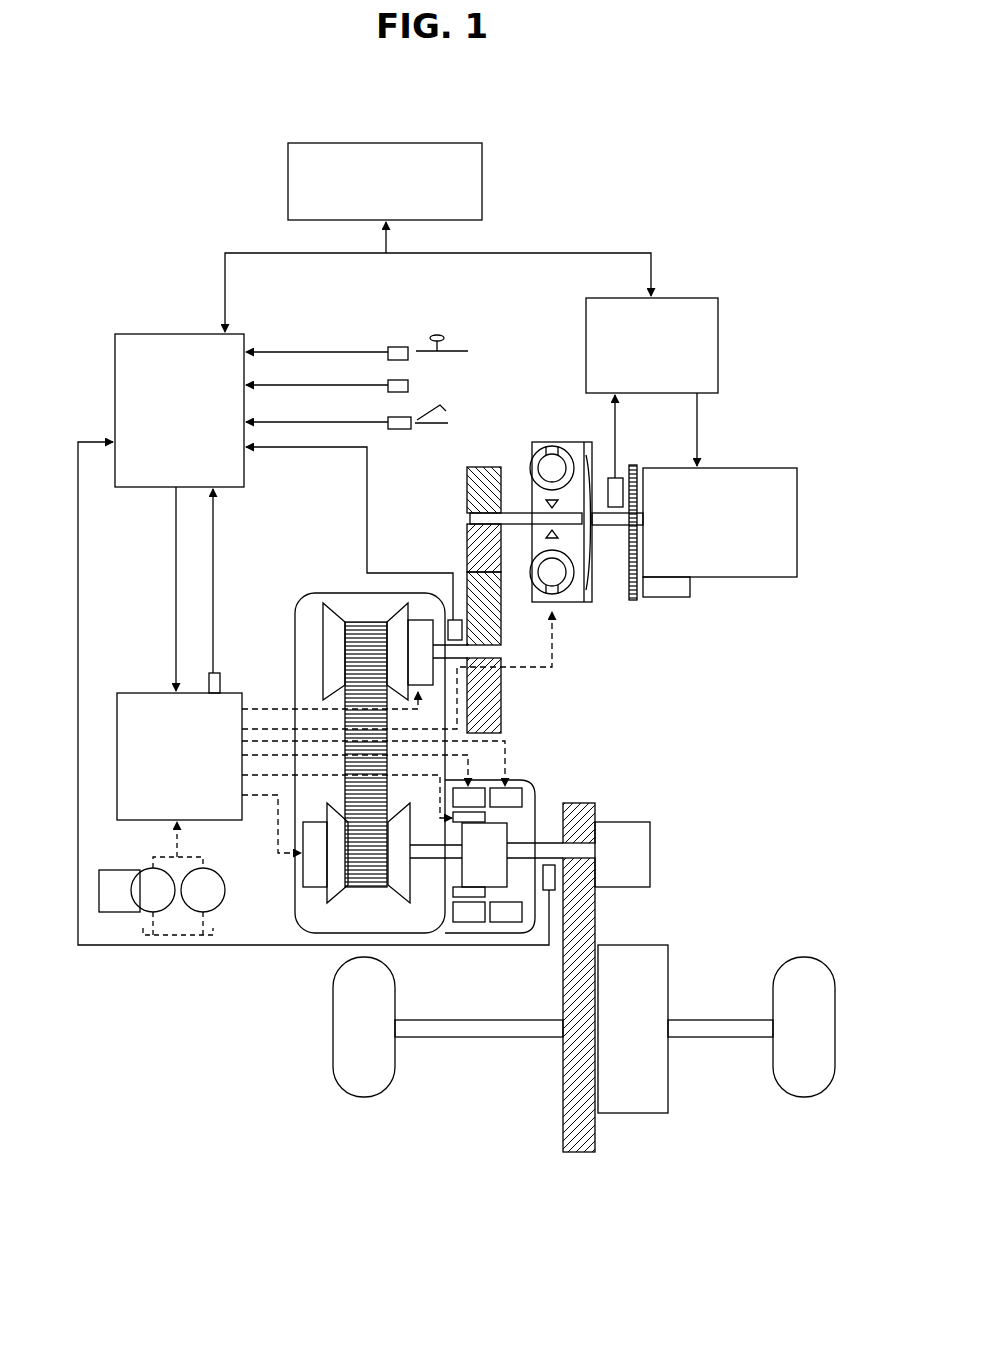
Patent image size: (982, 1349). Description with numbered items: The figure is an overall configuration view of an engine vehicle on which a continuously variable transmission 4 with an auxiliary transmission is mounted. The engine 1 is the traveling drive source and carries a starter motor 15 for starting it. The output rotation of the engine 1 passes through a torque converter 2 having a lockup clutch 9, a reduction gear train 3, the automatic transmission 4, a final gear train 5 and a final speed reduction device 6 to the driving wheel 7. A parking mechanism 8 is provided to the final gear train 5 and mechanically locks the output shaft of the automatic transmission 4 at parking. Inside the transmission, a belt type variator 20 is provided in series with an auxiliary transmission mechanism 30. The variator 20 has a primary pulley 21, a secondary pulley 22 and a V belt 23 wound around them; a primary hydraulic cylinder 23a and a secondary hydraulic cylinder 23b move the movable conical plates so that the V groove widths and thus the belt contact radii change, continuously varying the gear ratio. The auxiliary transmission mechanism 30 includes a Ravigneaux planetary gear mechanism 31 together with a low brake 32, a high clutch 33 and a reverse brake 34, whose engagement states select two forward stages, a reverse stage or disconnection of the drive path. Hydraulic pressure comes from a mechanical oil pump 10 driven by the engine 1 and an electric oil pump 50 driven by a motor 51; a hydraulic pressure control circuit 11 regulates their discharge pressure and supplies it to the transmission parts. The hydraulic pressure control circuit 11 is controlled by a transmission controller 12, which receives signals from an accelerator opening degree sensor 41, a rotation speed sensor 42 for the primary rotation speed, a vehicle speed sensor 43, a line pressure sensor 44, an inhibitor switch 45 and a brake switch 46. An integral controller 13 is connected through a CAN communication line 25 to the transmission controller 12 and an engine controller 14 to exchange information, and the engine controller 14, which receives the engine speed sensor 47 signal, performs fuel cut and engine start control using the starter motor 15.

The engine 1 is at (787, 490).
The torque converter 2 is at (552, 438).
The reduction gear train 3 is at (483, 465).
The continuously variable transmission 4 is at (328, 592).
The final gear train 5 is at (583, 1156).
The final speed reduction device 6 is at (648, 1100).
The driving wheel 7 is at (365, 1090).
The parking mechanism 8 is at (630, 838).
The lockup clutch 9 is at (596, 585).
The mechanical oil pump 10 is at (212, 870).
The hydraulic pressure control circuit 11 is at (130, 700).
The transmission controller 12 is at (180, 345).
The integral controller 13 is at (483, 150).
The engine controller 14 is at (700, 297).
The starter motor 15 is at (668, 597).
The variator 20 is at (317, 622).
The primary pulley 21 is at (330, 647).
The secondary pulley 22 is at (340, 882).
The V belt 23 is at (365, 625).
The primary hydraulic cylinder 23a is at (423, 630).
The secondary hydraulic cylinder 23b is at (318, 862).
The CAN communication line 25 is at (496, 253).
The auxiliary transmission mechanism 30 is at (532, 833).
The Ravigneaux planetary gear mechanism 31 is at (488, 868).
The low brake 32 is at (478, 795).
The high clutch 33 is at (460, 893).
The reverse brake 34 is at (510, 795).
The accelerator opening degree sensor 41 is at (405, 430).
The rotation speed sensor 42 is at (455, 618).
The vehicle speed sensor 43 is at (556, 873).
The line pressure sensor 44 is at (220, 680).
The inhibitor switch 45 is at (398, 347).
The brake switch 46 is at (412, 386).
The engine speed sensor 47 is at (612, 476).
The electric oil pump 50 is at (148, 870).
The motor 51 is at (118, 872).